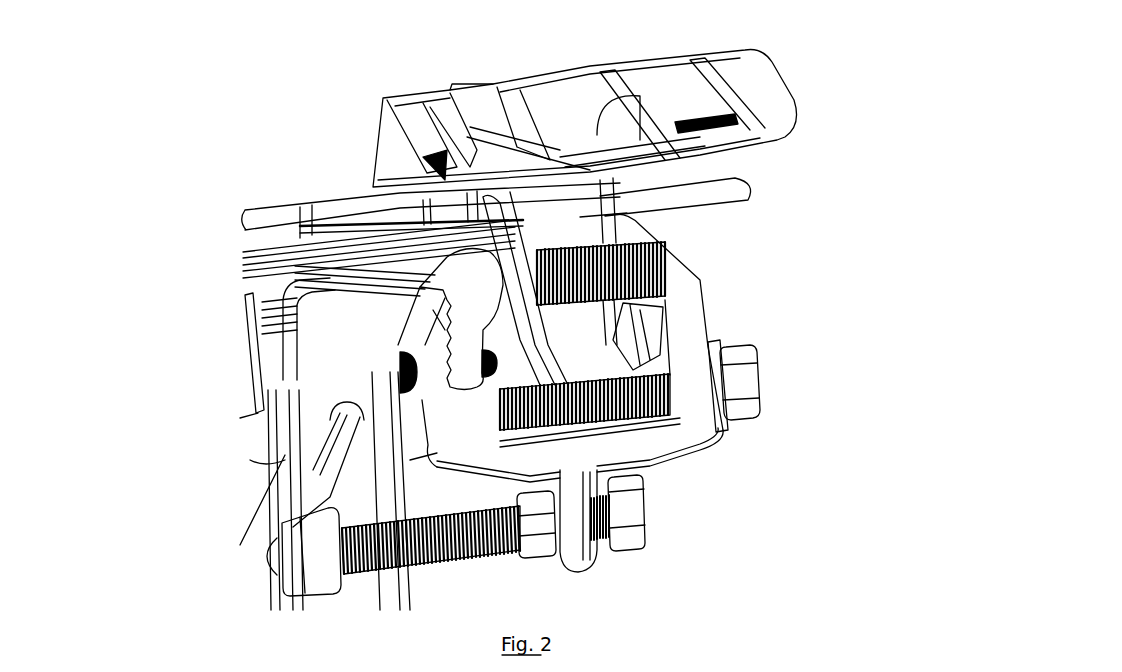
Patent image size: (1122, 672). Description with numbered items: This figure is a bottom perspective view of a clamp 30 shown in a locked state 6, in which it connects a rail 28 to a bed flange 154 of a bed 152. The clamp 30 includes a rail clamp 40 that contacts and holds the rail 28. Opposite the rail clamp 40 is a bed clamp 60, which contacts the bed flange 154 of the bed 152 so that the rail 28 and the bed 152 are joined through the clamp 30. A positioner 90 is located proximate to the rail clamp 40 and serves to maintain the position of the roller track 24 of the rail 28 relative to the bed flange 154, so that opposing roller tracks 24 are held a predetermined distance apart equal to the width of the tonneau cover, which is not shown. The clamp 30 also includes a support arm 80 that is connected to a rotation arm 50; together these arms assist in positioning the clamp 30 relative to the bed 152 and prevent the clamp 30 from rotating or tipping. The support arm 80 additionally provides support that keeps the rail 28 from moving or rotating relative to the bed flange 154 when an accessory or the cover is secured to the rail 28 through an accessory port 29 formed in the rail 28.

The locked state 6 is at (250, 118).
The rail 28 is at (775, 92).
The accessory port 29 is at (455, 92).
The roller track 24 is at (735, 128).
The bed flange 154 is at (250, 226).
The bed clamp 60 is at (385, 360).
The rail clamp 40 is at (722, 281).
The positioner 90 is at (680, 250).
The clamp 30 is at (748, 432).
The rotation arm 50 is at (568, 508).
The support arm 80 is at (240, 565).
The bed 152 is at (400, 457).